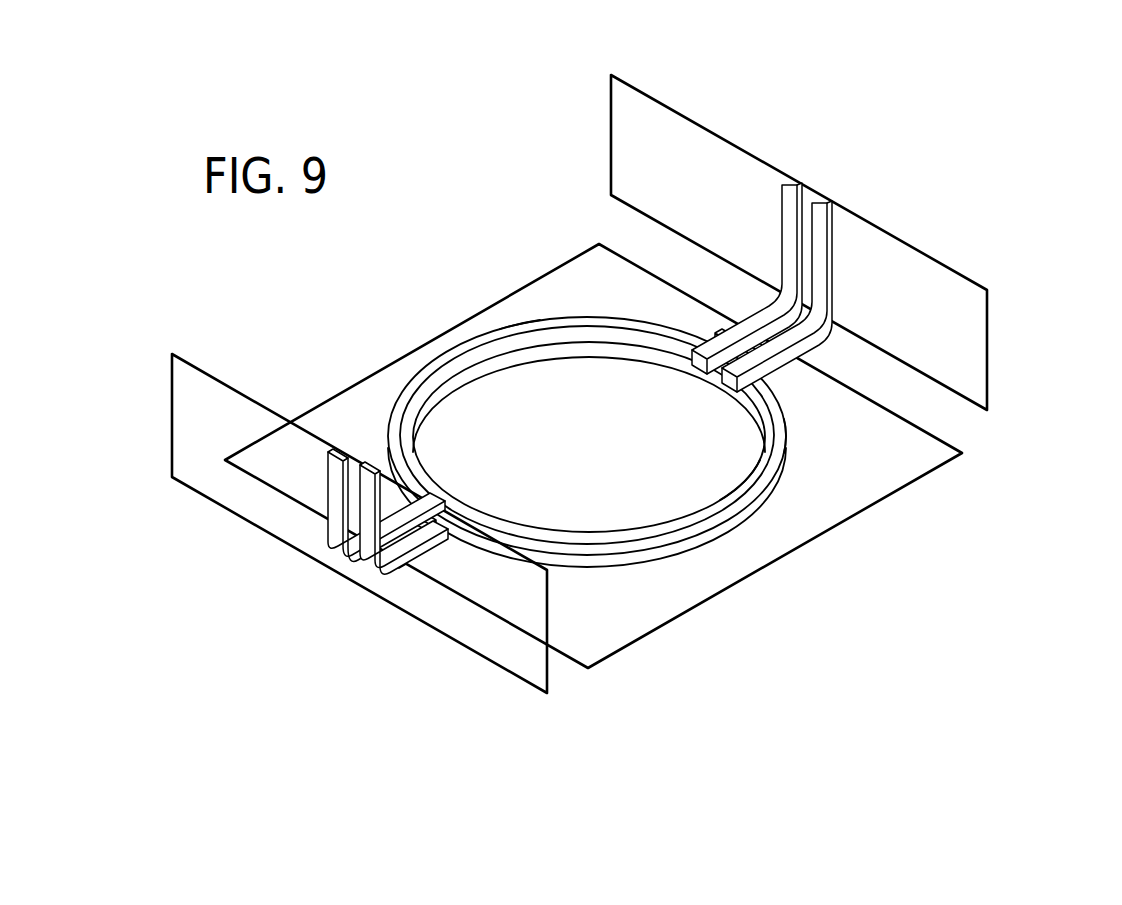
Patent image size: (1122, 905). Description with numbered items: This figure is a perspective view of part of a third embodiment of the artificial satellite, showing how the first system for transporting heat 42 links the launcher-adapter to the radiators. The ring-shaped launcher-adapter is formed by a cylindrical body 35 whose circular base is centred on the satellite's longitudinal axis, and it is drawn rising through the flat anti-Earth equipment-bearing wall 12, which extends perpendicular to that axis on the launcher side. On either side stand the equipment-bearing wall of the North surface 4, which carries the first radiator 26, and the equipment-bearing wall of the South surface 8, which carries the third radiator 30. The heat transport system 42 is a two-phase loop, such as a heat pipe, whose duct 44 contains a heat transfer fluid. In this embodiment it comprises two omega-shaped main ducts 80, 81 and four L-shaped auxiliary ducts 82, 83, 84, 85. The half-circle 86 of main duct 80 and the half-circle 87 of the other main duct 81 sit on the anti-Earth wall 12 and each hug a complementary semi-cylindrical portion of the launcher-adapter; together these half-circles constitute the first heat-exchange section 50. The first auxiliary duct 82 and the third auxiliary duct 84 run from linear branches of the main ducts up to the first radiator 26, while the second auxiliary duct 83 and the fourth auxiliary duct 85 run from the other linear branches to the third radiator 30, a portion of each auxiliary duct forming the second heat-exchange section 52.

The equipment-bearing wall of the North surface 4 is at (853, 242).
The first radiator 26 is at (973, 317).
The equipment-bearing wall of the South surface 8 is at (359, 555).
The third radiator 30 is at (532, 666).
The anti-Earth equipment-bearing wall 12 is at (668, 603).
The cylindrical body 35 is at (530, 357).
The first system for transporting heat 42 is at (558, 205).
The duct 44 is at (425, 378).
The first section of a heat-exchange duct 50 is at (467, 350).
The second section of a heat-exchange duct 52 is at (557, 356).
The main duct 80 is at (738, 540).
The main duct 81 is at (517, 303).
The first auxiliary duct 82 is at (827, 273).
The second auxiliary duct 83 is at (343, 580).
The third auxiliary duct 84 is at (785, 255).
The fourth auxiliary duct 85 is at (328, 470).
The half-circle 86 is at (787, 465).
The half-circle 87 is at (438, 350).